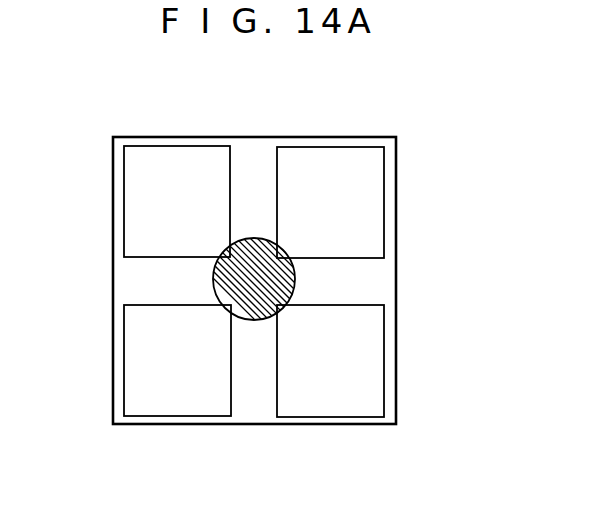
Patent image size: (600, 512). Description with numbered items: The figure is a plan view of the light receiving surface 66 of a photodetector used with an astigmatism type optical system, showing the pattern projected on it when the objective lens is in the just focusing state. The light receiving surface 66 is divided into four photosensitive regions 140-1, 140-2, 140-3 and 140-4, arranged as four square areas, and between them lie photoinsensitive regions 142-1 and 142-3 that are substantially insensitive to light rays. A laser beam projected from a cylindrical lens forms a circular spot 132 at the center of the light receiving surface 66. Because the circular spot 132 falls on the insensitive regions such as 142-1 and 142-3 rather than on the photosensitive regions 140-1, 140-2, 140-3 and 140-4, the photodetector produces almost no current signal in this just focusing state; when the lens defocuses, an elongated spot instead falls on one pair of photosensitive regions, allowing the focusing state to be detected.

The light receiving surface 66 is at (397, 243).
The circular spot 132 is at (292, 282).
The photosensitive region 140-1 is at (140, 178).
The photosensitive region 140-2 is at (372, 385).
The photosensitive region 140-3 is at (372, 178).
The photosensitive region 140-4 is at (145, 378).
The photoinsensitive region 142-1 is at (258, 148).
The gap between electrodes 142-3 is at (378, 292).